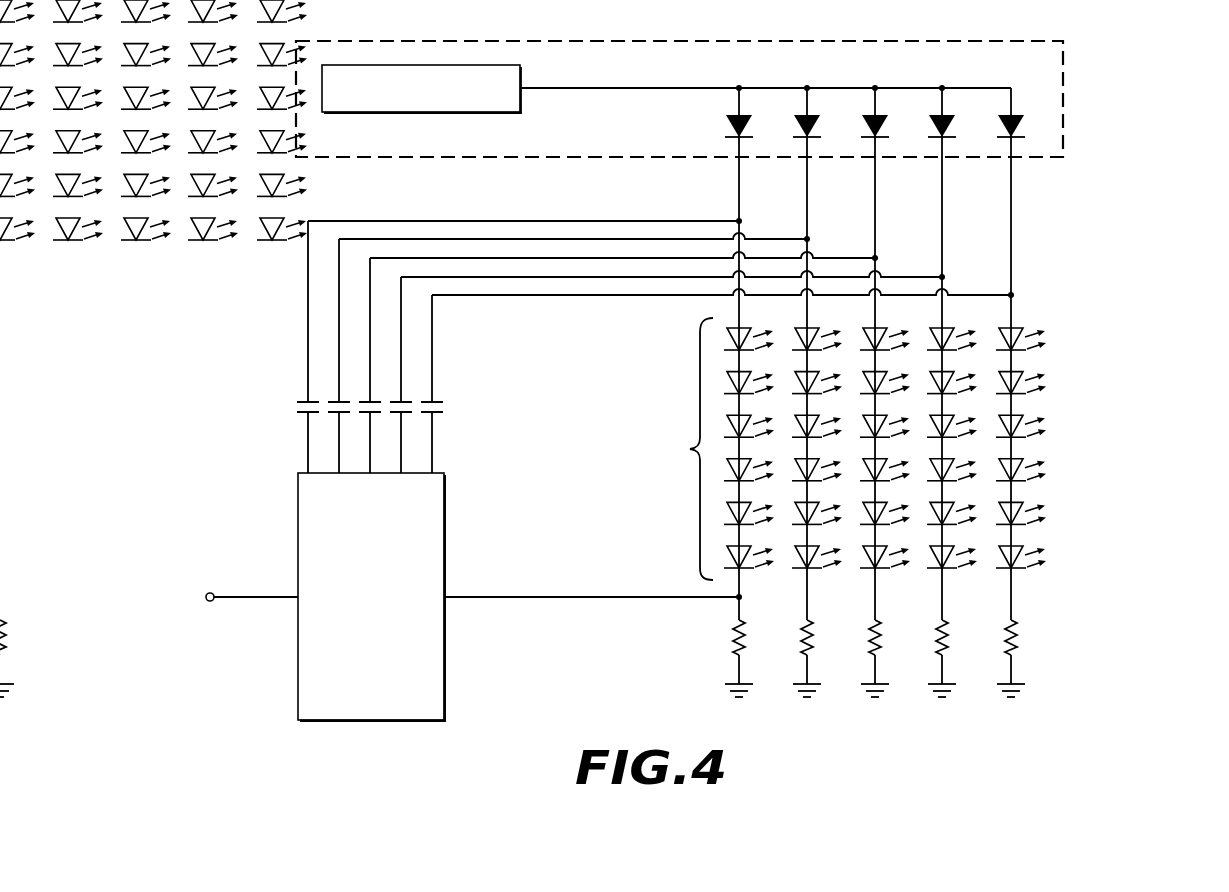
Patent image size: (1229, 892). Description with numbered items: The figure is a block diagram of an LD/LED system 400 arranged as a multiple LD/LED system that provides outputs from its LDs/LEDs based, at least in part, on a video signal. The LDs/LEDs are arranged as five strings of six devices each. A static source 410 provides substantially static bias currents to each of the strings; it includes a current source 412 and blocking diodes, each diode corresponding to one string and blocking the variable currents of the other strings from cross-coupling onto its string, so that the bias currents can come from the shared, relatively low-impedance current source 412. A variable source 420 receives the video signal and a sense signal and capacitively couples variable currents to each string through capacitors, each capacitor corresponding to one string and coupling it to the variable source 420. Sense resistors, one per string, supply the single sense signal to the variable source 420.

The LD/LED system 400 is at (607, 360).
The static source 410 is at (679, 121).
The current source 412 is at (378, 113).
The variable source 420 is at (298, 533).